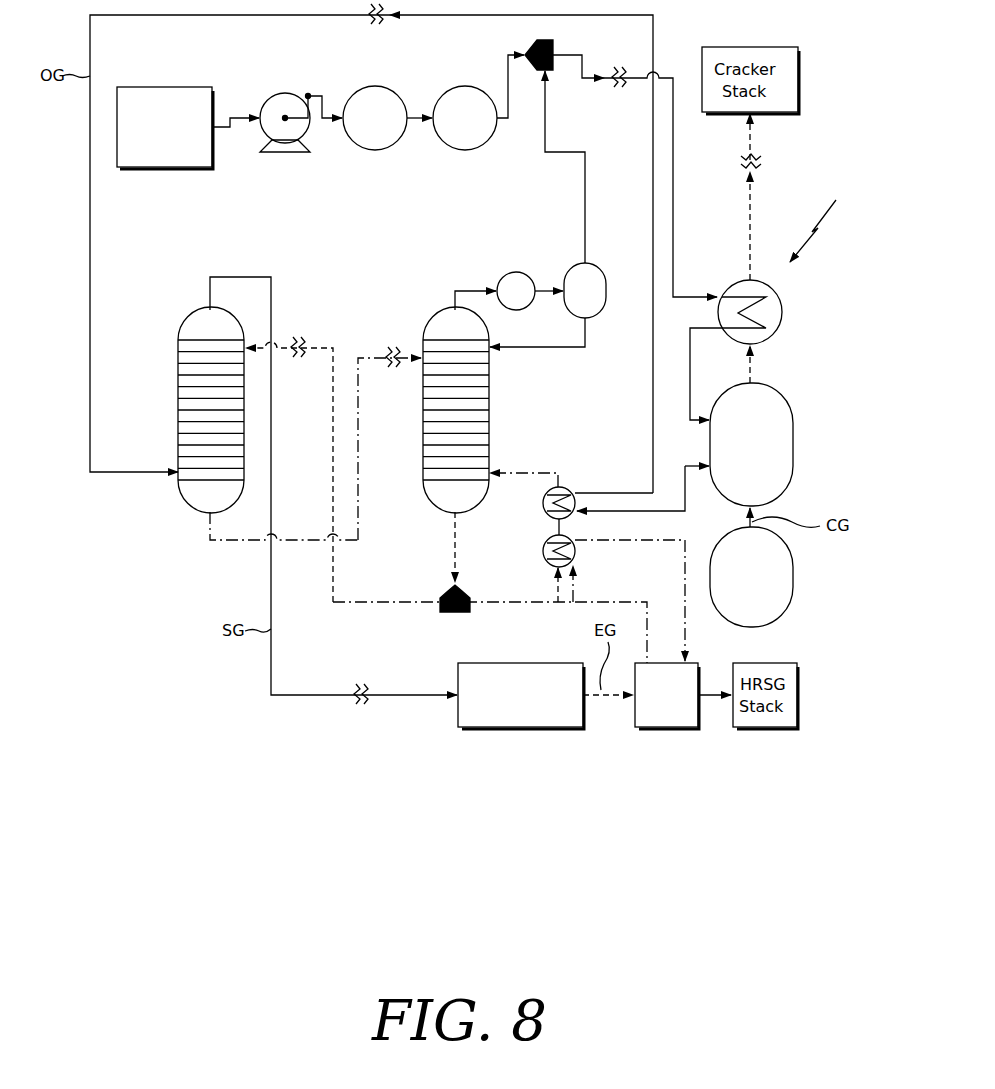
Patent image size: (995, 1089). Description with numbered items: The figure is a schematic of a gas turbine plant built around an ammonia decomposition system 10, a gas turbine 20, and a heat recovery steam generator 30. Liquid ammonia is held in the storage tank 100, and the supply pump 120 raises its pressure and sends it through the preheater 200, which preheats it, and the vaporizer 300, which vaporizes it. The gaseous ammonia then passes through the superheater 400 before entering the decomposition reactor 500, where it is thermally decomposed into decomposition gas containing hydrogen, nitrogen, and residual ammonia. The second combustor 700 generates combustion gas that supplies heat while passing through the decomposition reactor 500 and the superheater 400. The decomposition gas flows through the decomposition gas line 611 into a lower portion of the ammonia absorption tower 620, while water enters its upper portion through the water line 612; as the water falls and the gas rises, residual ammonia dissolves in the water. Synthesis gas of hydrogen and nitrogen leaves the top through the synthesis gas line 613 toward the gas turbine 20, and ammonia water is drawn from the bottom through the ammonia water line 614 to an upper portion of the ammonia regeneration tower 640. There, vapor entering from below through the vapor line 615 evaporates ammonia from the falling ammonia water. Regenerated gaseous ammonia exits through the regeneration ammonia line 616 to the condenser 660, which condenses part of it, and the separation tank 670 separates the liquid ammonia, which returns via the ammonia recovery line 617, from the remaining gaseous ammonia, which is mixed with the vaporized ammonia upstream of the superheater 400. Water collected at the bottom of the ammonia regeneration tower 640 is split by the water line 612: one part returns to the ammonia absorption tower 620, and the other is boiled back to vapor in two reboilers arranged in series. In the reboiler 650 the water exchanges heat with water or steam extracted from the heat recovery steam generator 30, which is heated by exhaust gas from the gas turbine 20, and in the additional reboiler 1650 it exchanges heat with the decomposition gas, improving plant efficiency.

The ammonia decomposition system 10 is at (818, 220).
The gas turbine 20 is at (518, 662).
The heat recovery steam generator 30 is at (660, 662).
The storage tank 100 is at (166, 87).
The supply pump 120 is at (286, 102).
The preheater 200 is at (374, 108).
The vaporizer 300 is at (464, 108).
The superheater 400 is at (783, 312).
The decomposition reactor 500 is at (795, 445).
The second combustor 700 is at (795, 572).
The decomposition gas line 611 is at (114, 472).
The water line 612 is at (333, 346).
The synthesis gas line 613 is at (271, 554).
The ammonia water line 614 is at (358, 358).
The vapor line 615 is at (535, 470).
The regeneration ammonia line 616 is at (478, 288).
The ammonia recovery line 617 is at (537, 348).
The ammonia absorption tower 620 is at (190, 358).
The ammonia regeneration tower 640 is at (435, 485).
The reboiler 650 is at (543, 549).
The condenser 660 is at (516, 277).
The separation tank 670 is at (598, 270).
The additional reboiler 1650 is at (566, 490).